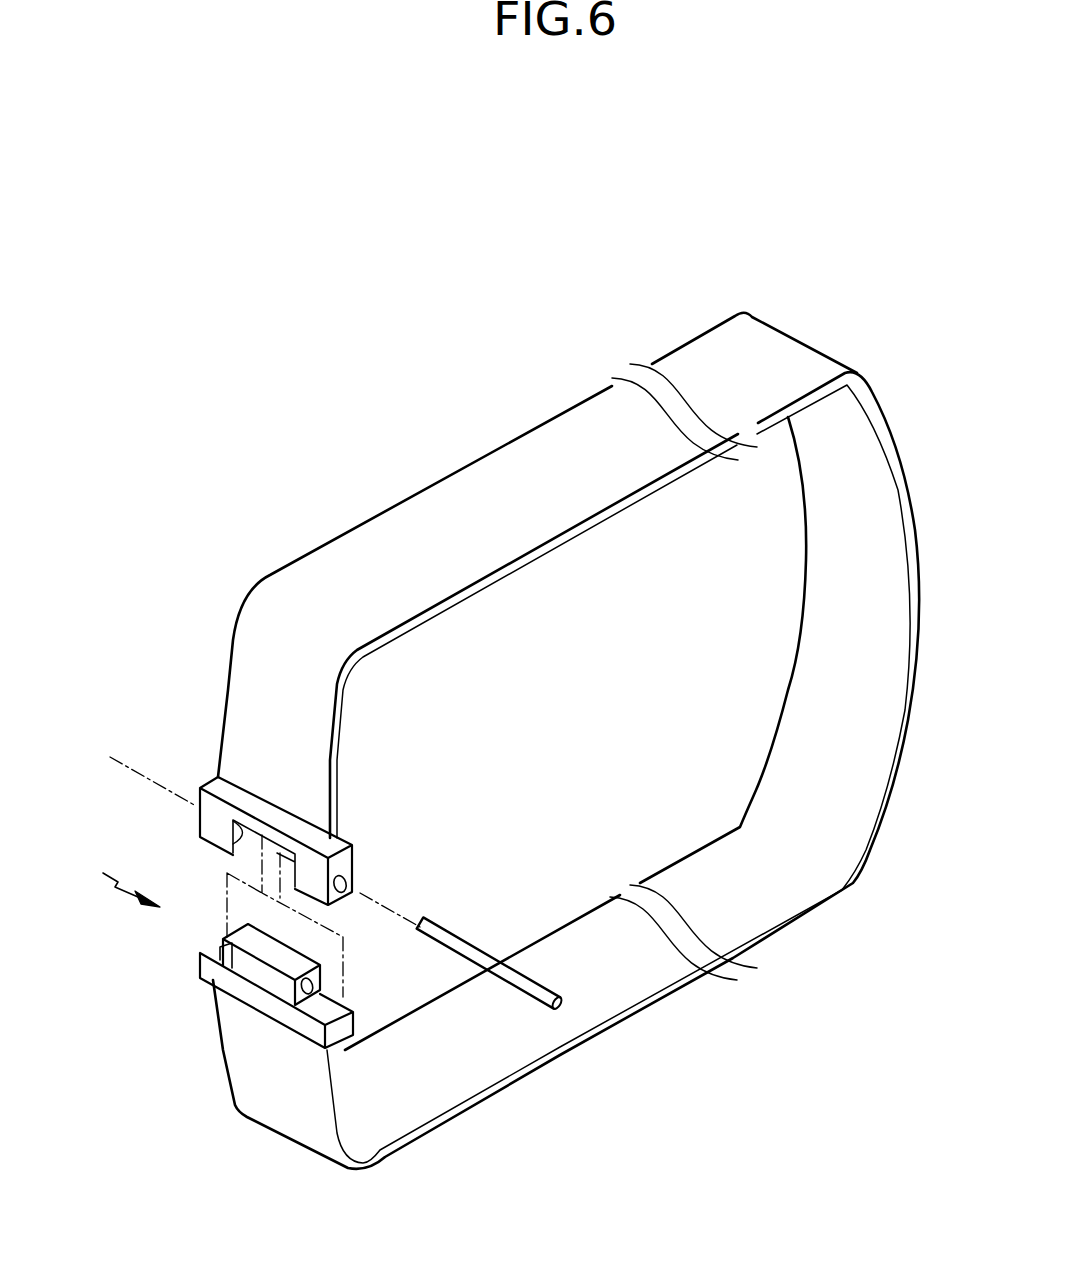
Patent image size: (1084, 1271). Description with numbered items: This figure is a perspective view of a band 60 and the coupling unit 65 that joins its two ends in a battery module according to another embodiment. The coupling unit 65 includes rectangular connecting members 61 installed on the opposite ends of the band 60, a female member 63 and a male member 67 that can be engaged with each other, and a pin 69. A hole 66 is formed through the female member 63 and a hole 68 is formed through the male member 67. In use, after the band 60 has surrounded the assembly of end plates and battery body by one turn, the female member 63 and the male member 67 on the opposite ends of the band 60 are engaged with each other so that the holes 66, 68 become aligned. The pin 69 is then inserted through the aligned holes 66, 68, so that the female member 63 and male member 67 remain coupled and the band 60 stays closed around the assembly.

The band 60 is at (315, 607).
The connecting member 61 is at (213, 780).
The female member 63 is at (273, 900).
The coupling unit 65 is at (116, 876).
The hole 66 is at (350, 883).
The male member 67 is at (203, 943).
The hole 68 is at (316, 984).
The pin 69 is at (467, 957).